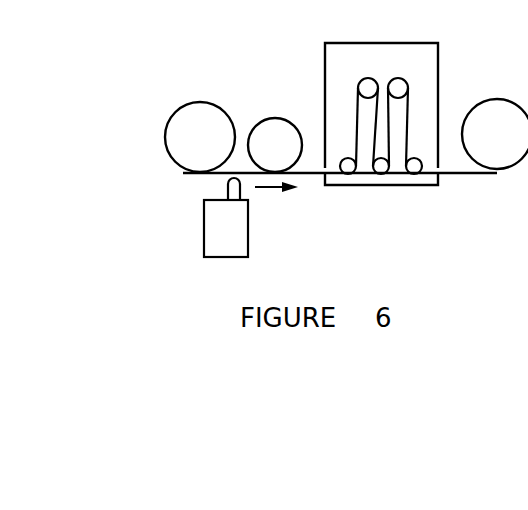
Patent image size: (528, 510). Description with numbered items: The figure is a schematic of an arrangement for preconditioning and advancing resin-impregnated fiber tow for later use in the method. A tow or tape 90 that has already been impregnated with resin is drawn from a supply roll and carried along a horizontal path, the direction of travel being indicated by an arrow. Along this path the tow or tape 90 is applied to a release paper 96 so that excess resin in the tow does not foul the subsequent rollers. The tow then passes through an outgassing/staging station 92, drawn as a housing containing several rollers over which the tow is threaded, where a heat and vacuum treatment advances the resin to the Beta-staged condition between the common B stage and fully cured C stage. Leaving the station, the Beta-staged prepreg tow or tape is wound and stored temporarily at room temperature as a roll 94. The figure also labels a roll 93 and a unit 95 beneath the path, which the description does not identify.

The tow or tape 90 is at (307, 174).
The outgassing/staging station 92 is at (360, 43).
The supply roll 93 is at (189, 148).
The roll of Beta-staged prepreg tow or tape 94 is at (487, 144).
The coating applicator 95 is at (212, 240).
The release paper 96 is at (264, 155).